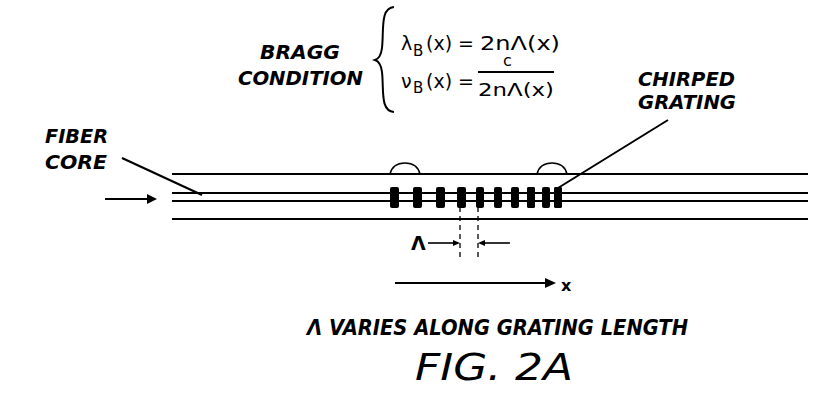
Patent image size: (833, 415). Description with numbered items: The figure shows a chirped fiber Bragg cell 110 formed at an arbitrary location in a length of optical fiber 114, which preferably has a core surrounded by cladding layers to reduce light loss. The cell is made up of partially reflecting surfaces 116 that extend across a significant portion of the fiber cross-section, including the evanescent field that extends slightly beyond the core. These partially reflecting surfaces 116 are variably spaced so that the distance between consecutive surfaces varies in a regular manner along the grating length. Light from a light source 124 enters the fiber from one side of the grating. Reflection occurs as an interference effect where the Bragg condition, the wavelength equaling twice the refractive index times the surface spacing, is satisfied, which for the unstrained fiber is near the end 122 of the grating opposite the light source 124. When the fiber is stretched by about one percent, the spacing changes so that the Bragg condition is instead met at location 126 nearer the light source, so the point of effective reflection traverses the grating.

The chirped fiber Bragg cell 110 is at (572, 160).
The optical fiber 114 is at (720, 174).
The partially reflecting surfaces 116 is at (528, 208).
The end of the chirped grating 122 is at (390, 170).
The light source 124 is at (132, 199).
The location 126 is at (567, 170).